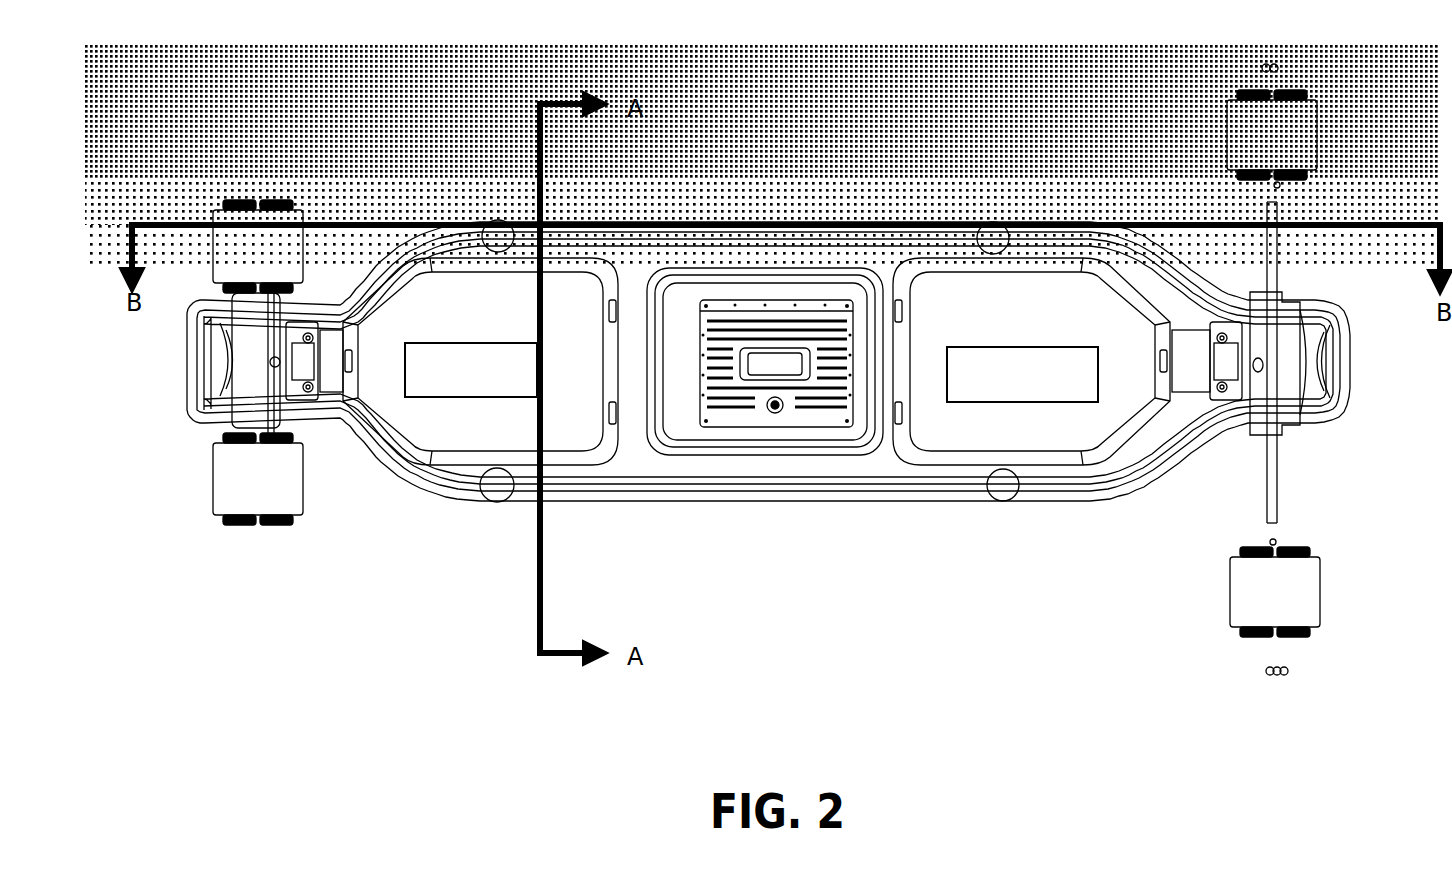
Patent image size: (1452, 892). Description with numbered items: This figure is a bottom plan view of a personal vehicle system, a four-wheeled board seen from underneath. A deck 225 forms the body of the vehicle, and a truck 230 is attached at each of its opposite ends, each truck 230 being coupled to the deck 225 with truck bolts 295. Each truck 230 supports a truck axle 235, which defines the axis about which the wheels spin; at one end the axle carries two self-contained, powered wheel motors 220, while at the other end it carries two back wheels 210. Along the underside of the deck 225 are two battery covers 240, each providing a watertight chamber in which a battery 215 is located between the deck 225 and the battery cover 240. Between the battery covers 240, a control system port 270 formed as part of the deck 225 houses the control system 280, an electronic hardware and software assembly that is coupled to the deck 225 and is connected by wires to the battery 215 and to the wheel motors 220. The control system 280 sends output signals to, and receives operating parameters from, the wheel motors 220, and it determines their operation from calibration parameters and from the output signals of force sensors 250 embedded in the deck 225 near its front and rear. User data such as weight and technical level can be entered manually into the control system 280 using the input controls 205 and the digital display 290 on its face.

The input controls 205 is at (773, 431).
The back wheels 210 is at (313, 199).
The battery 215 is at (751, 372).
The wheel motors 220 is at (1216, 120).
The deck 225 is at (596, 208).
The truck 230 is at (238, 345).
The truck axle 235 is at (1292, 245).
The battery cover 240 is at (756, 361).
The force sensors 250 is at (499, 213).
The control system port 270 is at (680, 444).
The control system 280 is at (836, 292).
The digital display 290 is at (801, 383).
The truck bolts 295 is at (318, 320).